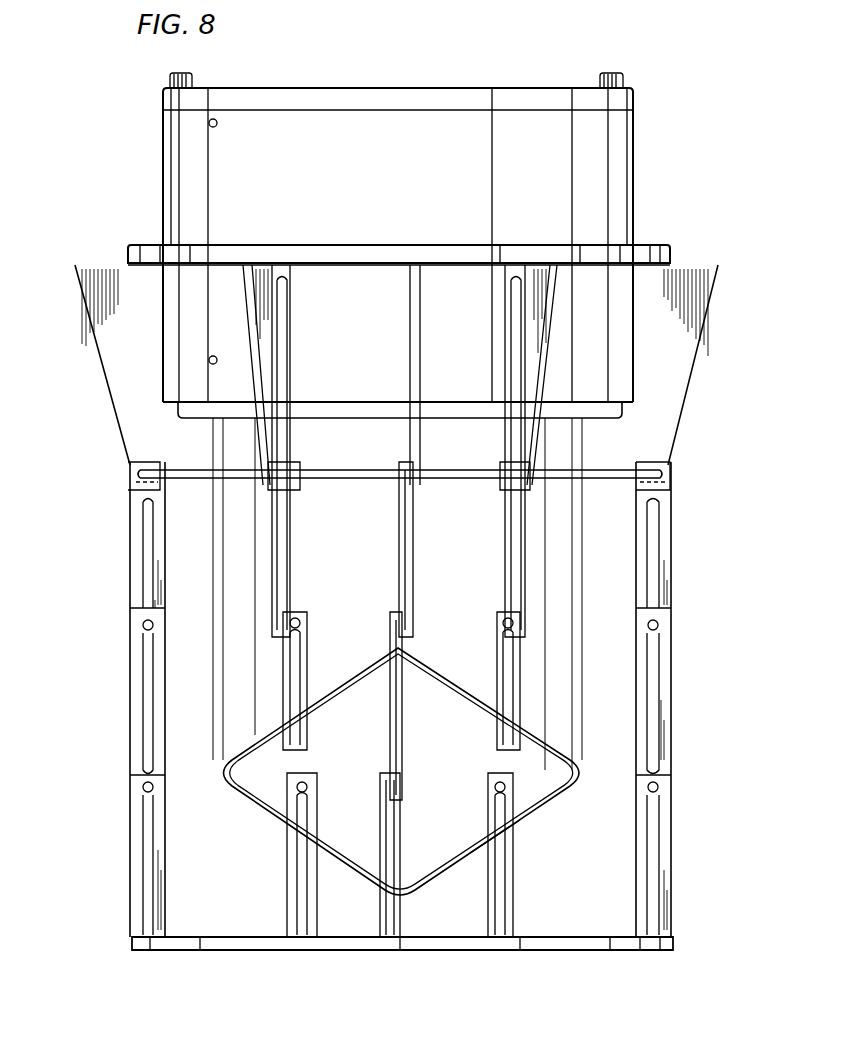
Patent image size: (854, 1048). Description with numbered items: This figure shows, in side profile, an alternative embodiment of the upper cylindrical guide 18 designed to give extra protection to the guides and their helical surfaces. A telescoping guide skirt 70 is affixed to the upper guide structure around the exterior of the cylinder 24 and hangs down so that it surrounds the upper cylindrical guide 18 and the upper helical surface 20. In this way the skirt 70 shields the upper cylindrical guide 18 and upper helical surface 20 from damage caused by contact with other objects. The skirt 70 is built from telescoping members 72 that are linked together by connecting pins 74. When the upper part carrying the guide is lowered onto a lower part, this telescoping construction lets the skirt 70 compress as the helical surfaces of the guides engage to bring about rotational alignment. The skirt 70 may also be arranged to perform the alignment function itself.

The cylinder 24 is at (633, 178).
The telescoping guide skirt 70 is at (678, 587).
The telescoping members 72 is at (672, 541).
The connecting pins 74 is at (143, 629).
The upper cylindrical guide 18 is at (583, 730).
The upper helical surface 20 is at (540, 830).